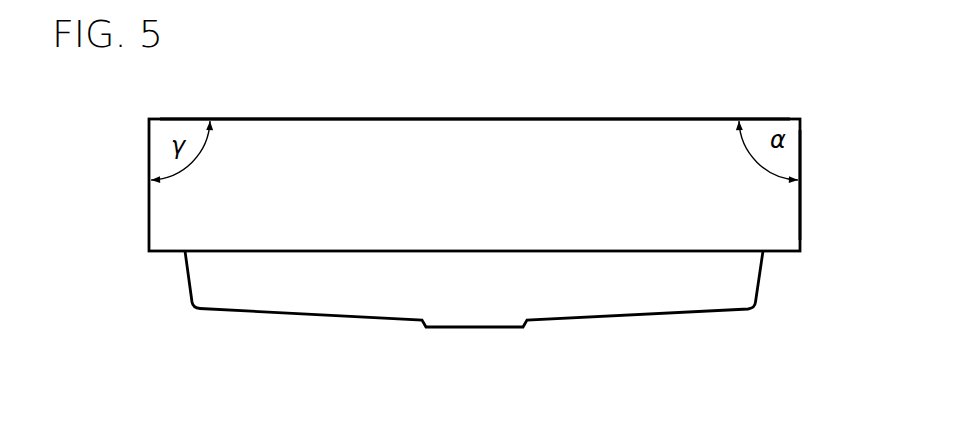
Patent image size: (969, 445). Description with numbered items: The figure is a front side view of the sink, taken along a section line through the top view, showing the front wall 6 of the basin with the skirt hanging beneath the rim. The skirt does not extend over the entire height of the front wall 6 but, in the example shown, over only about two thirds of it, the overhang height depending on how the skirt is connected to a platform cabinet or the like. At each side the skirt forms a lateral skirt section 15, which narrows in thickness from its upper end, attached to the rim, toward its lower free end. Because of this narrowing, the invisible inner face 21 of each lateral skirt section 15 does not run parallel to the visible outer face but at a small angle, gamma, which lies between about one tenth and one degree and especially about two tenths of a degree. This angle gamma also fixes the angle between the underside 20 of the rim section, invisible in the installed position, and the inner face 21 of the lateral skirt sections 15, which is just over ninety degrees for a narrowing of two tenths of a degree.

The lateral skirt section 15 is at (148, 137).
The underside of the rim section 20 is at (508, 119).
The inner face of the lateral skirt section 21 is at (800, 229).
The front wall 6 is at (618, 302).